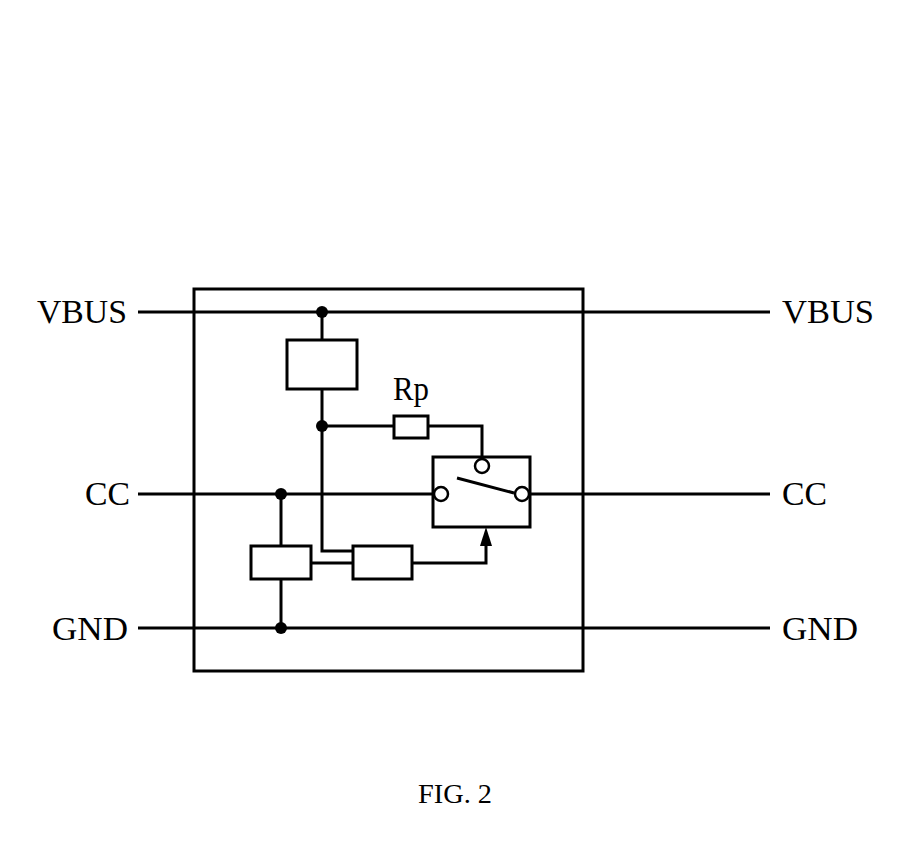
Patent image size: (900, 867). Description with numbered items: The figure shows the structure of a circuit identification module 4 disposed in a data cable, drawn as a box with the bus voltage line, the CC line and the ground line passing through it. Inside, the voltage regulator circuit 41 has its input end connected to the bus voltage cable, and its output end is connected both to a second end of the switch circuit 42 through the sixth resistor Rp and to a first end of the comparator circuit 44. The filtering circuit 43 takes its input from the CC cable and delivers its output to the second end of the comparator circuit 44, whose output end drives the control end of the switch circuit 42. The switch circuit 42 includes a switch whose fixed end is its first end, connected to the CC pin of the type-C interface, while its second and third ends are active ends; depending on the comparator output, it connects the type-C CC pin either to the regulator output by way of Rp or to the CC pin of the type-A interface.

The circuit identification module 4 is at (420, 113).
The voltage regulator circuit 41 is at (287, 358).
The switch circuit 42 is at (512, 457).
The filtering circuit 43 is at (251, 571).
The comparator circuit 44 is at (388, 579).